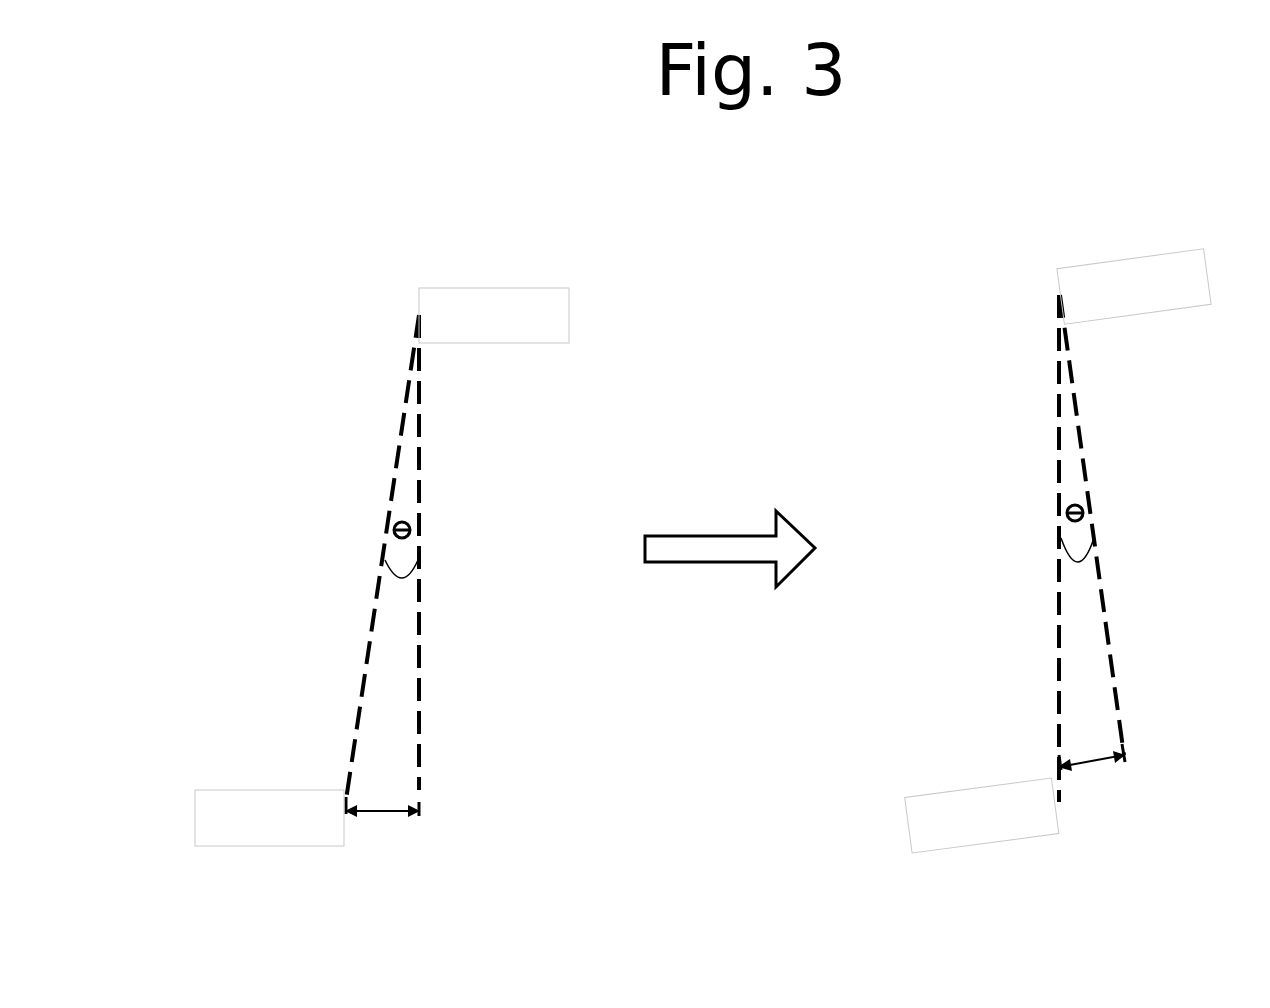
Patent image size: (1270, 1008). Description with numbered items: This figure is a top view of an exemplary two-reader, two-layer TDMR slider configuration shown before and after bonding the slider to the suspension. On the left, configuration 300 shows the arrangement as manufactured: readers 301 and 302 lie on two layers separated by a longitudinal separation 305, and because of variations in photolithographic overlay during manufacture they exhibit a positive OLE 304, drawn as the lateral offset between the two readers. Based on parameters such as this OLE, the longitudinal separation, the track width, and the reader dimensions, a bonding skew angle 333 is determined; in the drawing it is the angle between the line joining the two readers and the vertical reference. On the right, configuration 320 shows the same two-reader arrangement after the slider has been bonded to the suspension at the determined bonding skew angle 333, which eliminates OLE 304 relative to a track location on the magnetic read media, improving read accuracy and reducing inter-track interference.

The two-reader, two-layer configuration 300 is at (251, 224).
The configuration after bonding 320 is at (1076, 224).
The reader 301 is at (627, 815).
The reader 302 is at (815, 296).
The bonding skew angle 333 is at (420, 530).
The OLE 304 is at (382, 812).
The longitudinal separation 305 is at (420, 654).